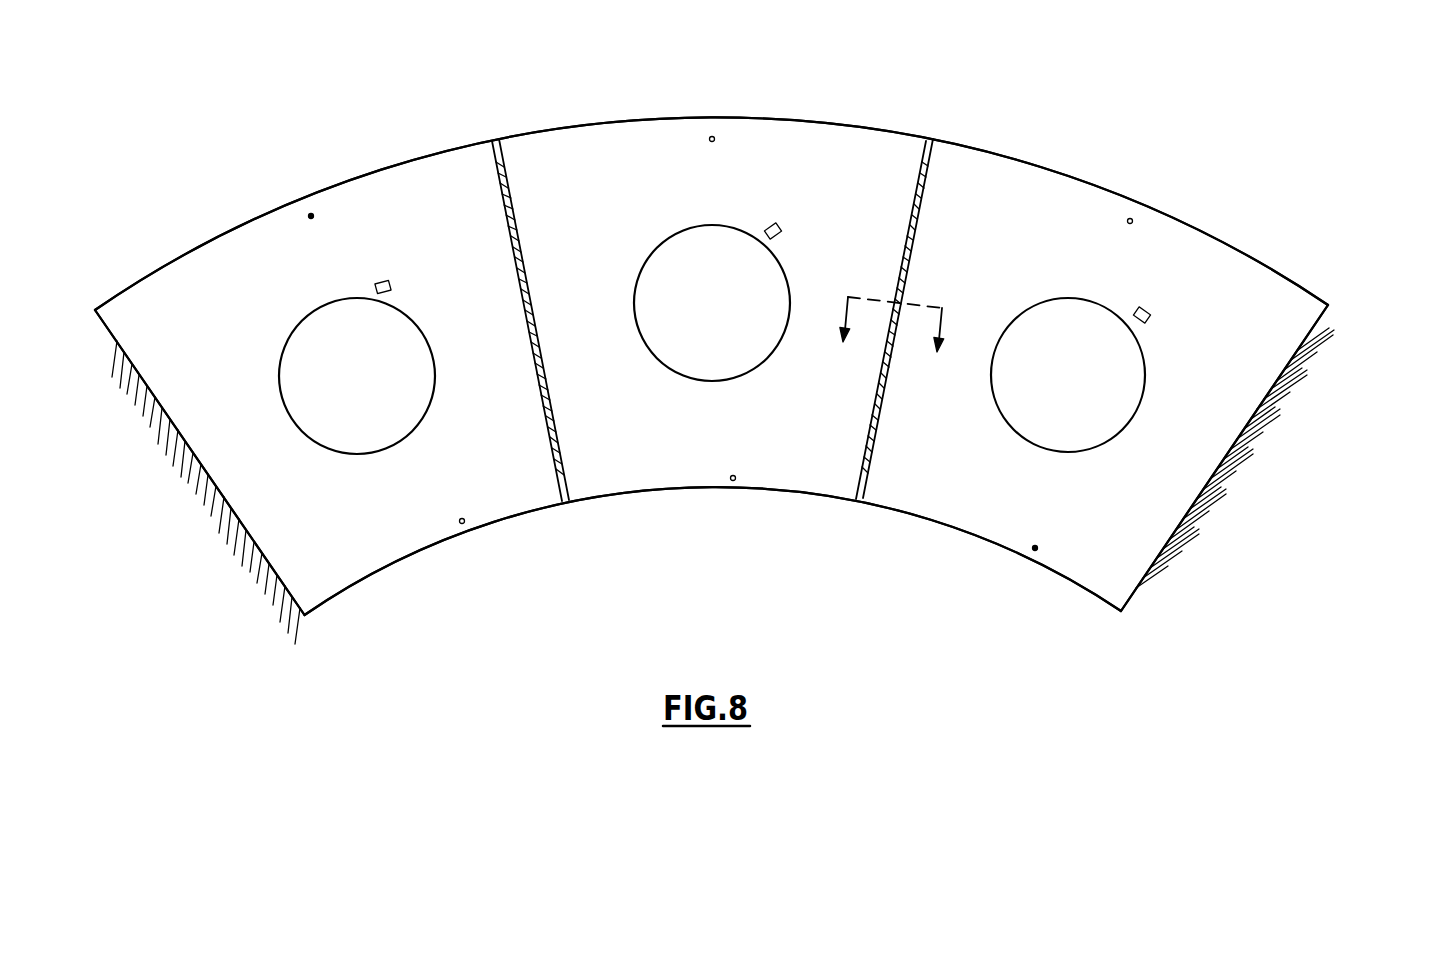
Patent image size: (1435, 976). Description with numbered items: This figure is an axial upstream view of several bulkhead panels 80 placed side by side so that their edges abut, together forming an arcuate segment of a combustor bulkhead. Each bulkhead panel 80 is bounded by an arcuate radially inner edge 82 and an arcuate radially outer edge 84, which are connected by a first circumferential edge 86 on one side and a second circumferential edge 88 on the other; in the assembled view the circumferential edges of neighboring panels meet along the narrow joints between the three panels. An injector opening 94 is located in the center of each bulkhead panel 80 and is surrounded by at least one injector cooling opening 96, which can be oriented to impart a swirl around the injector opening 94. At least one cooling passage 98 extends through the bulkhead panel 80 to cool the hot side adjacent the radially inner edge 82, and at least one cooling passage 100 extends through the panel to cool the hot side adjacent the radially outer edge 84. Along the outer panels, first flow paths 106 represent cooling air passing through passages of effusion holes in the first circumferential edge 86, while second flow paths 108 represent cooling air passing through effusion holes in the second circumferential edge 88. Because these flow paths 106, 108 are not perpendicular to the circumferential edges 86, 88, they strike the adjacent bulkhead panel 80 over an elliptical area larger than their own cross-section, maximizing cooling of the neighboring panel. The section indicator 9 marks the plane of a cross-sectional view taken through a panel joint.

The bulkhead panel 80 is at (434, 104).
The arcuate radially inner edge 82 is at (393, 567).
The arcuate radially outer edge 84 is at (368, 166).
The first circumferential edge 86 is at (103, 322).
The second circumferential edge 88 is at (493, 140).
The injector opening 94 is at (386, 337).
The injector cooling opening 96 is at (388, 281).
The cooling passage 98 is at (462, 524).
The cooling passage 100 is at (311, 214).
The first flow paths 106 is at (138, 378).
The second flow paths 108 is at (1310, 327).
The section line 9- 9 is at (889, 344).